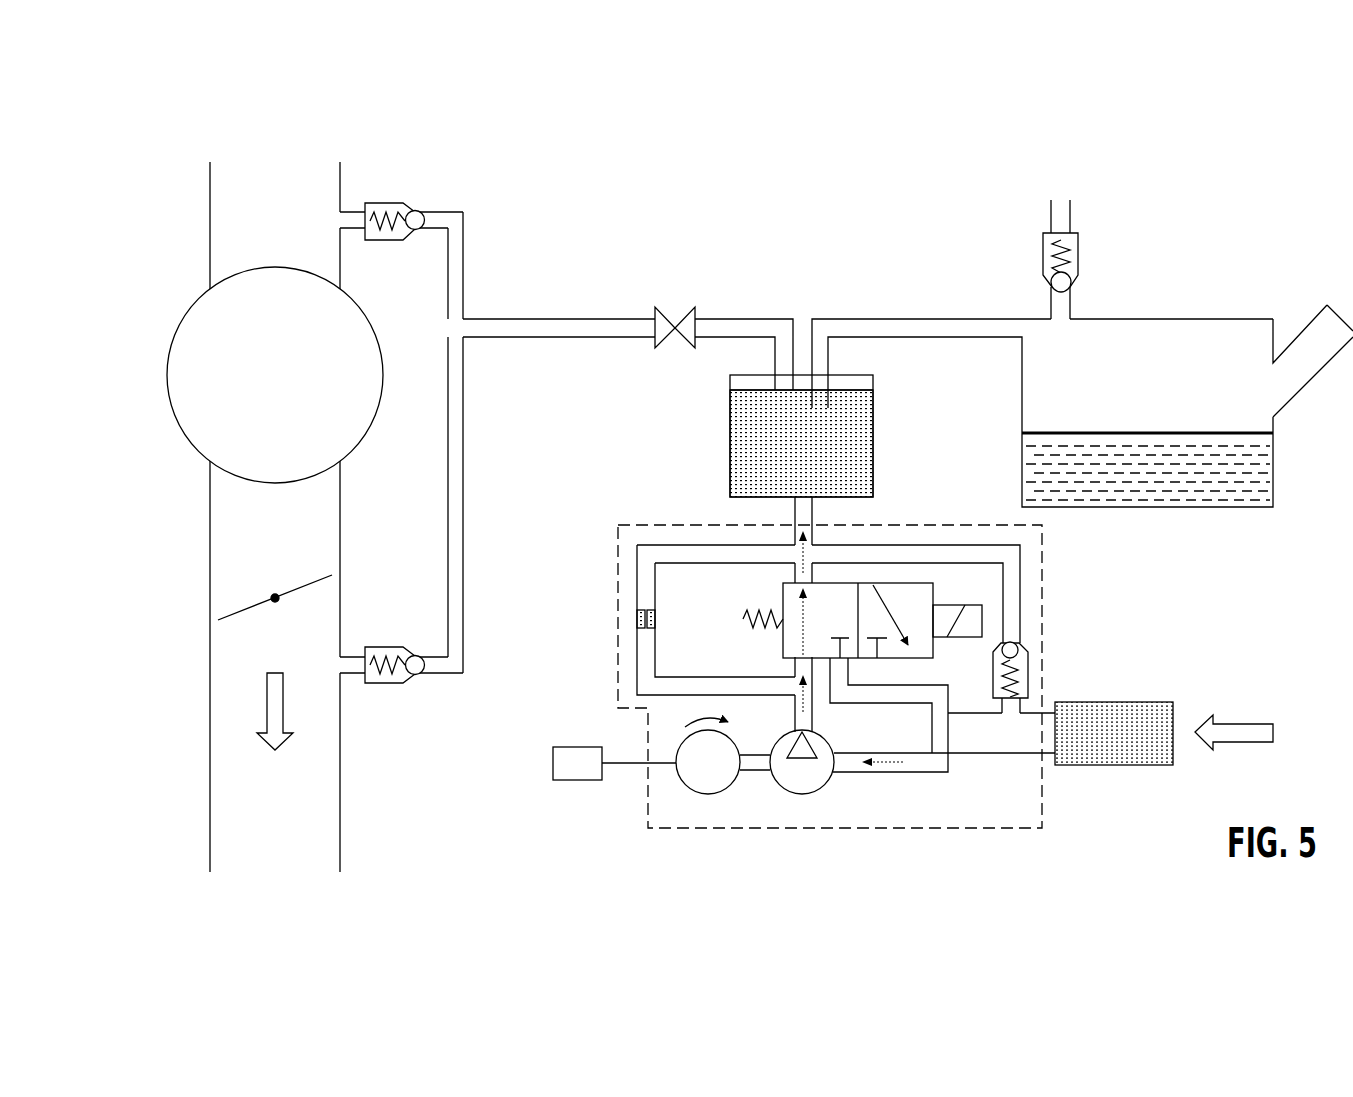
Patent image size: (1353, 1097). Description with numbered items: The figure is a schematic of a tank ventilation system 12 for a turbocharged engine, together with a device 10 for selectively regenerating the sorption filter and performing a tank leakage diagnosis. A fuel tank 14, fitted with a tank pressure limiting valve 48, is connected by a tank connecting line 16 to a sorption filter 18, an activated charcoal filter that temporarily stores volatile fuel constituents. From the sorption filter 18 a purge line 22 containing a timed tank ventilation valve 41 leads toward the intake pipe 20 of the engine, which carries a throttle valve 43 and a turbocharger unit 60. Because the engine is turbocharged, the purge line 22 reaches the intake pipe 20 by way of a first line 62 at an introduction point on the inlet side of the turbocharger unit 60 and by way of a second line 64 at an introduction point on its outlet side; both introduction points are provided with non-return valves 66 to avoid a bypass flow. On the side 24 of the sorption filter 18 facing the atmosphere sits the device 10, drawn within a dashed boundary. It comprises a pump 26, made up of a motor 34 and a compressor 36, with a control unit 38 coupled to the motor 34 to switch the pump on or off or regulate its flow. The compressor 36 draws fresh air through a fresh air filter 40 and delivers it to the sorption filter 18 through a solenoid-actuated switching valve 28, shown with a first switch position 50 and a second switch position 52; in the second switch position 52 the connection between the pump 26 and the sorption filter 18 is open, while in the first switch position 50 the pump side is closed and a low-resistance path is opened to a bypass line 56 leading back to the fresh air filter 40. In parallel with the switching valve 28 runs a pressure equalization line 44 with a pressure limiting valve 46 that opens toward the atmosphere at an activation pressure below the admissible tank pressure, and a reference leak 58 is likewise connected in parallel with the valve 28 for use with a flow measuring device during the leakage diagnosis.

The device 10 is at (600, 683).
The tank ventilation system 12 is at (1213, 172).
The fuel tank 14 is at (1235, 398).
The tank connecting line 16 is at (897, 328).
The sorption filter 18 is at (843, 442).
The intake pipe 20 is at (240, 214).
The purge line 22 is at (617, 326).
The side facing the atmosphere 24 is at (765, 497).
The pump 26 is at (788, 798).
The switching valve 28 is at (917, 614).
The motor 34 is at (708, 776).
The compressor 36 is at (800, 780).
The control unit 38 is at (580, 765).
The fresh air filter 40 is at (1125, 727).
The tank ventilation valve 41 is at (680, 326).
The throttle valve 43 is at (240, 610).
The pressure equalization line 44 is at (1010, 613).
The pressure limiting valve 46 is at (1018, 677).
The tank pressure limiting valve 48 is at (1043, 253).
The first switch position 50 is at (925, 615).
The second switch position 52 is at (851, 615).
The bypass line 56 is at (887, 693).
The reference leak 58 is at (637, 619).
The turbocharger unit 60 is at (237, 411).
The first line 62 is at (435, 222).
The second line 64 is at (353, 665).
The non-return valves 66 is at (392, 212).